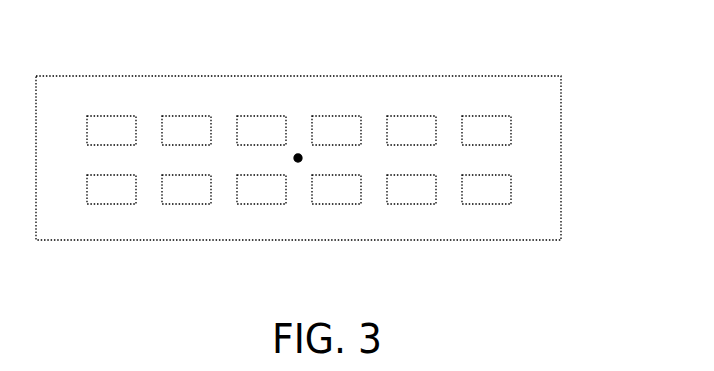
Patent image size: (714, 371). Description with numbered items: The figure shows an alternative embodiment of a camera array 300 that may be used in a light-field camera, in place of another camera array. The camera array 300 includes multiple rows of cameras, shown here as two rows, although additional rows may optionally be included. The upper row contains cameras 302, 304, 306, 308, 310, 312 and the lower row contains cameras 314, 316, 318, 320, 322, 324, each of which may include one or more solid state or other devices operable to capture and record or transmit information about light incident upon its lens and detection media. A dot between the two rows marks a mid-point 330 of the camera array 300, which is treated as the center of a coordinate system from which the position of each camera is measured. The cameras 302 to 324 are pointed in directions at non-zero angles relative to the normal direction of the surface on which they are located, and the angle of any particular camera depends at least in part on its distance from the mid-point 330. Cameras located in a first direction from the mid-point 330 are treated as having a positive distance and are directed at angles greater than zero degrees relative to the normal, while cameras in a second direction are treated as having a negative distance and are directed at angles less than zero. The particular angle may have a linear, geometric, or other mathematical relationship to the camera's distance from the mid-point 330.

The camera array 300 is at (606, 137).
The camera 302 is at (111, 130).
The camera 304 is at (186, 130).
The camera 306 is at (261, 130).
The camera 308 is at (336, 130).
The camera 310 is at (411, 130).
The camera 312 is at (486, 130).
The camera 314 is at (111, 189).
The camera 316 is at (186, 189).
The camera 318 is at (261, 189).
The camera 320 is at (336, 189).
The camera 322 is at (411, 189).
The camera 324 is at (486, 189).
The mid-point 330 is at (298, 154).